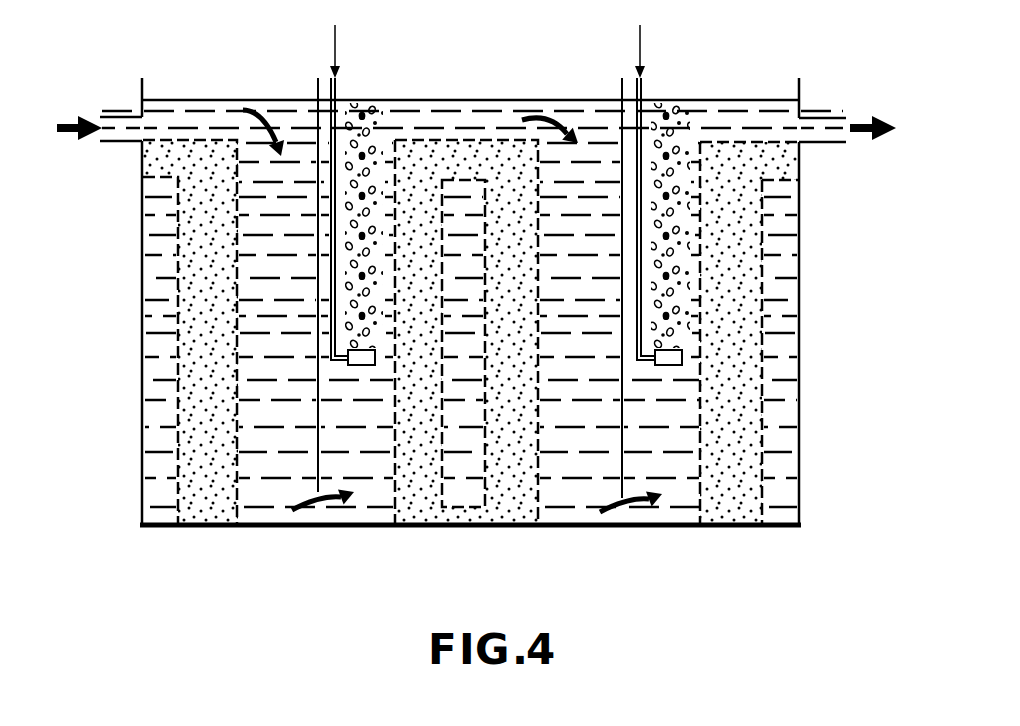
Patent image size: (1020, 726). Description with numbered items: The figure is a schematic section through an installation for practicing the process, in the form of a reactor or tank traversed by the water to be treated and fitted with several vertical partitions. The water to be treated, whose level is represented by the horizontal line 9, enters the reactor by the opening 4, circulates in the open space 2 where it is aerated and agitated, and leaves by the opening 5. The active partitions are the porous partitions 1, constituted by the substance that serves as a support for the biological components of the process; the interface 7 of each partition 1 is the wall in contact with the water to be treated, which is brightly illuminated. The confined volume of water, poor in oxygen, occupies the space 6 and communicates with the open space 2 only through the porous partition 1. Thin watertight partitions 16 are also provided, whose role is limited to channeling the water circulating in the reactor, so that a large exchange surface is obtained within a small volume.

The porous partition 1 is at (210, 496).
The space 2 is at (297, 160).
The opening 4 is at (103, 125).
The opening 5 is at (835, 132).
The space 6 is at (172, 380).
The interface 7 is at (483, 180).
The horizontal line 9 is at (182, 99).
The thin watertight partitions 16 is at (318, 78).